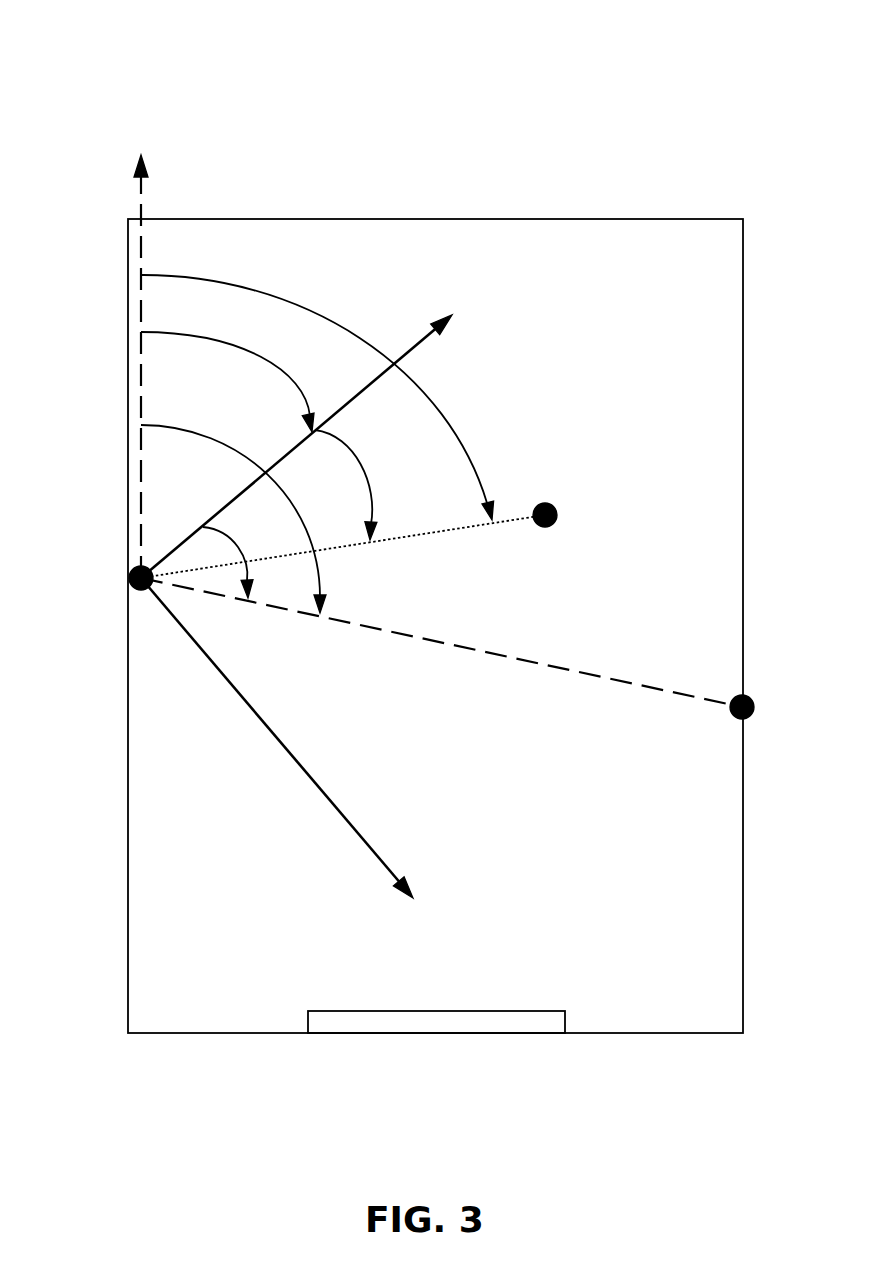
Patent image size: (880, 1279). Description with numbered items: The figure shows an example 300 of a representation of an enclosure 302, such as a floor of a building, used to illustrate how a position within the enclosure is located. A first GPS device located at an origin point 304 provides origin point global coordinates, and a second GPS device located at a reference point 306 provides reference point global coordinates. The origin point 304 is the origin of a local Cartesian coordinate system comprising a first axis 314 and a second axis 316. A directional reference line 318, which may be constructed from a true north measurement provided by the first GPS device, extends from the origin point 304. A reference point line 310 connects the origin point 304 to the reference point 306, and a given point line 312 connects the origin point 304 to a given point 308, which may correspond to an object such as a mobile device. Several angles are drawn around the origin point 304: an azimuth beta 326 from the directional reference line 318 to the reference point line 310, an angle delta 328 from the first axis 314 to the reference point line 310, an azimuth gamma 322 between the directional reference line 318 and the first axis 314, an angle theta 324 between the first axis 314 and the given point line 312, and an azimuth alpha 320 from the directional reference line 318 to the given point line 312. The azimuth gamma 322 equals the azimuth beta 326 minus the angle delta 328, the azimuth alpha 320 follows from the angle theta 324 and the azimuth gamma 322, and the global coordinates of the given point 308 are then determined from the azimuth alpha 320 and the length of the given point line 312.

The example 300 is at (275, 50).
The enclosure 302 is at (500, 219).
The origin point 304 is at (130, 572).
The reference point 306 is at (748, 695).
The given point 308 is at (552, 503).
The reference point line 310 is at (701, 698).
The given point line 312 is at (505, 520).
The first axis 314 is at (455, 310).
The second axis 316 is at (407, 905).
The directional reference line 318 is at (137, 174).
The azimuth alpha 320 is at (263, 293).
The azimuth gamma 322 is at (173, 332).
The angle theta 324 is at (348, 450).
The azimuth beta 326 is at (160, 425).
The angle delta 328 is at (228, 535).